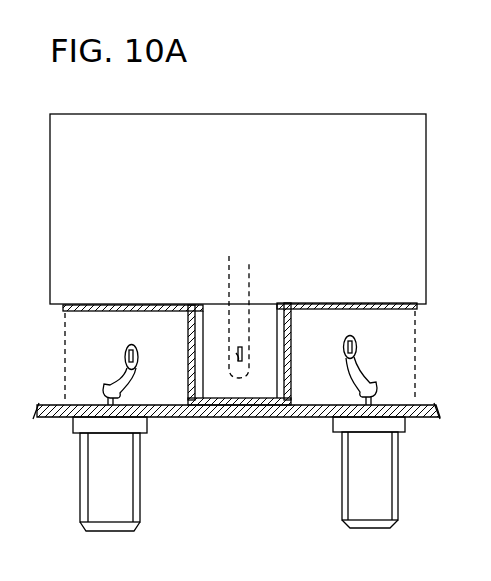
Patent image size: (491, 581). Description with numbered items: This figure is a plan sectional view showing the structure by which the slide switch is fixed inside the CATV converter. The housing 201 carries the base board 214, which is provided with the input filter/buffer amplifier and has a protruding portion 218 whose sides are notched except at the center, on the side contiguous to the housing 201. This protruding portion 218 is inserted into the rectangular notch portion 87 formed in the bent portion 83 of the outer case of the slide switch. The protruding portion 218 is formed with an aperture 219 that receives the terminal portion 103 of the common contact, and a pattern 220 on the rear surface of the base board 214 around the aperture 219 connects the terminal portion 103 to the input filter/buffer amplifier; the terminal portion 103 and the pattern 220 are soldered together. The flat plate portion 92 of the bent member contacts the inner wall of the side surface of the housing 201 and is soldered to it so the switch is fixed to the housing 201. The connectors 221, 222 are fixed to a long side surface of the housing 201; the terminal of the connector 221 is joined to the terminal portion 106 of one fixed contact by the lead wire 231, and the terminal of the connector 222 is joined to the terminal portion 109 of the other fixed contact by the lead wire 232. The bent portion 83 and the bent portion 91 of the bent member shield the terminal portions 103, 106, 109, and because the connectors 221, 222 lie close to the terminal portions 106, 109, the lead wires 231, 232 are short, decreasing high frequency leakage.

The base board 214 is at (345, 117).
The bent portion 83 is at (81, 304).
The notch portion 87 is at (206, 307).
The flat plate portion 92 is at (193, 416).
The bent portion 91 is at (292, 380).
The protruding portion 218 is at (263, 383).
The housing 201 is at (234, 416).
The pattern 220 is at (243, 272).
The aperture 219 is at (246, 348).
The terminal portion 103 is at (236, 353).
The terminal portion 106 is at (126, 350).
The lead wire 231 is at (117, 382).
The terminal portion 109 is at (358, 346).
The lead wire 232 is at (358, 372).
The connector 221 is at (141, 497).
The connector 222 is at (399, 497).